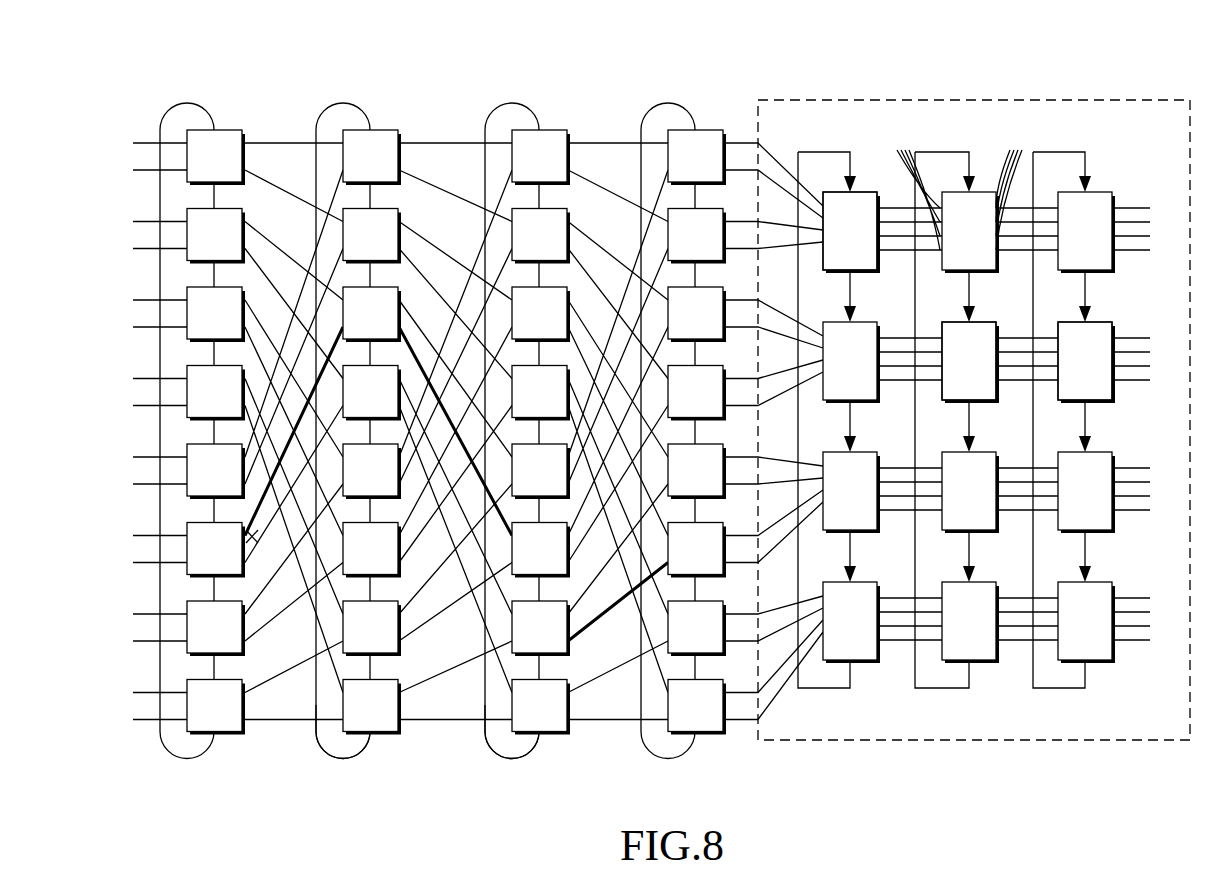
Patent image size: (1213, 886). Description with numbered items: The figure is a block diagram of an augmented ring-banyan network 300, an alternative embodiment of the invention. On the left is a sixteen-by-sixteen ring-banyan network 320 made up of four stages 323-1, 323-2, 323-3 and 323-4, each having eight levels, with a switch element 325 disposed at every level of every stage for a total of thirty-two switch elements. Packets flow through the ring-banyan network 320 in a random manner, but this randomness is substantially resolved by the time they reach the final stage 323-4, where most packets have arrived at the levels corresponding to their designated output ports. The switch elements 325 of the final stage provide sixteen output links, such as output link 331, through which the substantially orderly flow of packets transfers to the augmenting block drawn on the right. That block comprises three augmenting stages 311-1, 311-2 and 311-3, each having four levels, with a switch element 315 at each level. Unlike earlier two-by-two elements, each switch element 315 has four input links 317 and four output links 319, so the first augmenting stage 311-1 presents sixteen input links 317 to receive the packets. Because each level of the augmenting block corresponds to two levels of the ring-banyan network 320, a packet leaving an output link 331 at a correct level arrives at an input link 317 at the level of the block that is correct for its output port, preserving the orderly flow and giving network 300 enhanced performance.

The augmented ring-banyan network 300 is at (143, 770).
The ring-banyan network 320 is at (653, 794).
The first stage of ring-banyan network 323-1 is at (187, 80).
The second stage of ring-banyan network 323-2 is at (344, 80).
The third stage of ring-banyan network 323-3 is at (512, 80).
The final stage of ring-banyan network 323-4 is at (668, 80).
The switch element 325 is at (383, 738).
The output link of ring-banyan network 331 is at (722, 128).
The first augmenting stage 311-1 is at (850, 110).
The second augmenting stage 311-2 is at (969, 110).
The third augmenting stage 311-3 is at (1085, 110).
The switch element 315 is at (859, 192).
The input links 317 is at (910, 187).
The output links 319 is at (1027, 187).